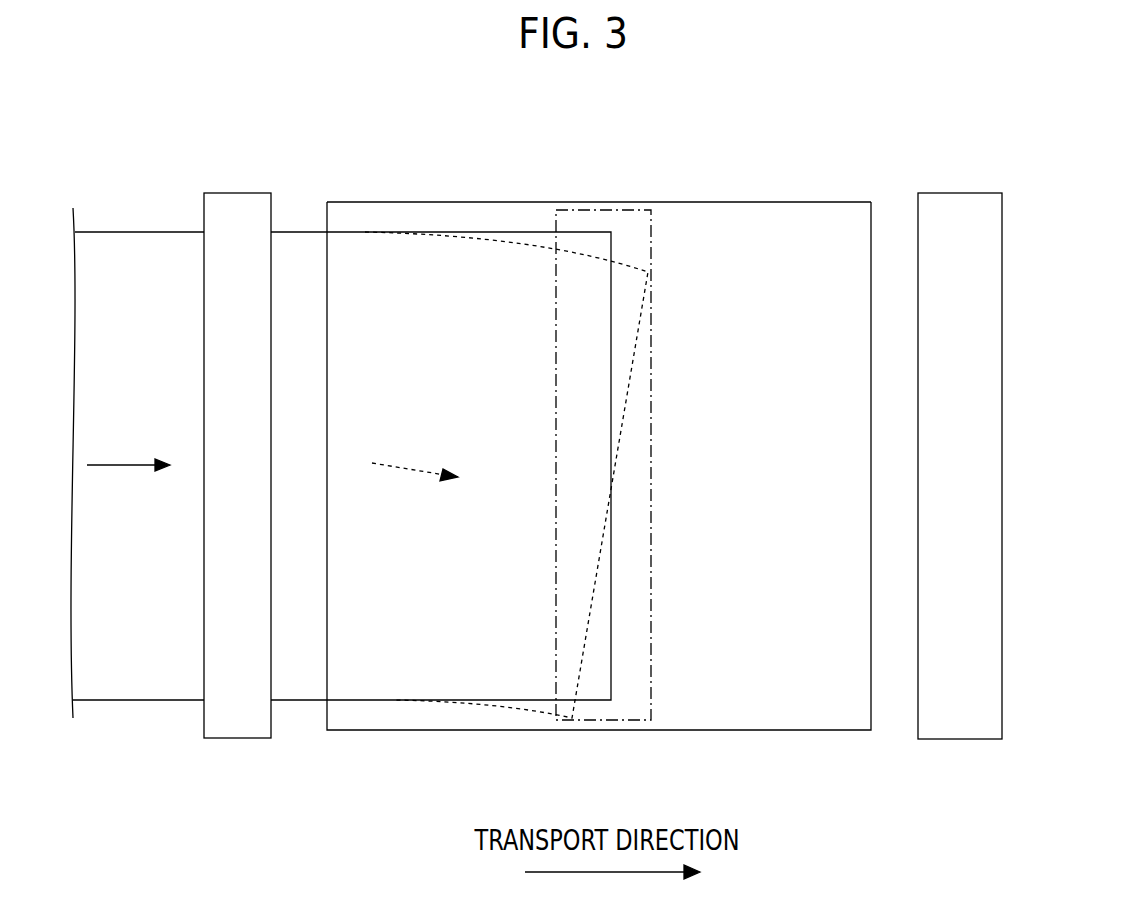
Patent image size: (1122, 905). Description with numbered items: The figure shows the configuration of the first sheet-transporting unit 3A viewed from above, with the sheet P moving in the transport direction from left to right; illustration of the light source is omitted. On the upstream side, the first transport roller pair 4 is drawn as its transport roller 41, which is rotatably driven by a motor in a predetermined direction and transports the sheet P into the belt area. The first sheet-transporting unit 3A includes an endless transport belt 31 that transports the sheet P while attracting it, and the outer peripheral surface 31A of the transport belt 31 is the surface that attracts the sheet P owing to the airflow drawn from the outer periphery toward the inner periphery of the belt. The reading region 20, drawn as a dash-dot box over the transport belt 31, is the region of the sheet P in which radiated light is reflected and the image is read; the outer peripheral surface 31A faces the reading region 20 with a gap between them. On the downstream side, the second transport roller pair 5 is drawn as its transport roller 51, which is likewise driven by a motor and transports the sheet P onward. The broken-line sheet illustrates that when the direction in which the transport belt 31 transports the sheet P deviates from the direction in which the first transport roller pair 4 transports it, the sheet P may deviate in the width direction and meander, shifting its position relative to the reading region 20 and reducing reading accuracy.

The first transport roller pair 4 is at (195, 458).
The transport roller 41 is at (235, 728).
The sheet P is at (300, 228).
The reading region 20 is at (620, 206).
The transport belt 31 is at (599, 424).
The outer peripheral surface 31A is at (762, 215).
The first sheet-transporting unit 3A is at (623, 399).
The second transport roller pair 5 is at (1013, 476).
The transport roller 51 is at (962, 726).